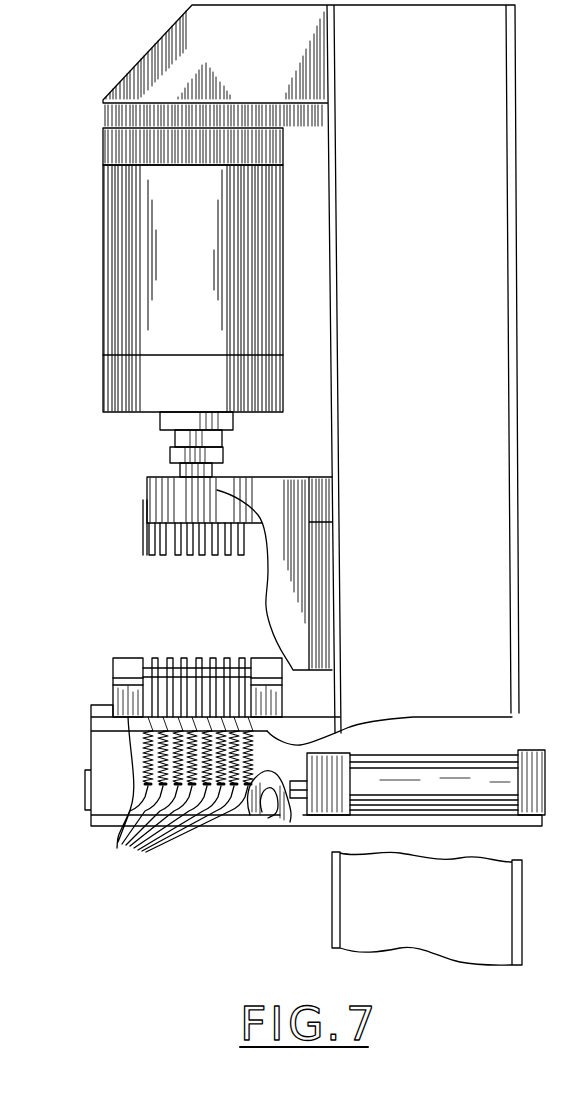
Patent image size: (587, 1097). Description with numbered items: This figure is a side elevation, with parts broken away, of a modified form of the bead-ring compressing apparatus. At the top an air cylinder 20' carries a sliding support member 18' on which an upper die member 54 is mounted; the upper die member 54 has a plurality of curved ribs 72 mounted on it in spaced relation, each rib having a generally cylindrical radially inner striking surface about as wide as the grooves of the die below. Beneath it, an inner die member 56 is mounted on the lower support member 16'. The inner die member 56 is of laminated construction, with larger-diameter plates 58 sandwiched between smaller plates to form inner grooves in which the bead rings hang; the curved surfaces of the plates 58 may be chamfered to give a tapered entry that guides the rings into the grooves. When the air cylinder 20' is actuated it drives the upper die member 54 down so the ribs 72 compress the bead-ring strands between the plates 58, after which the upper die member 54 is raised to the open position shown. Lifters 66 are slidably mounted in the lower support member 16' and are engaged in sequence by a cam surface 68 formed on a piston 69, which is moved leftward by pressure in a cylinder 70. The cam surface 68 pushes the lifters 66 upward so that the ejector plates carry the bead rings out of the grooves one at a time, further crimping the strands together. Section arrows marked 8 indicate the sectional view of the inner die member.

The air cylinder 20' is at (161, 288).
The sliding support member 18' is at (239, 547).
The upper die member 54 is at (143, 513).
The curved ribs 72 is at (226, 595).
The section line 8 is at (296, 628).
The plates 58 is at (243, 657).
The inner die member 56 is at (163, 664).
The lower support member 16' is at (286, 765).
The lifters 66 is at (176, 794).
The cam surface 68 is at (265, 826).
The piston 69 is at (282, 805).
The cylinder 70 is at (468, 766).